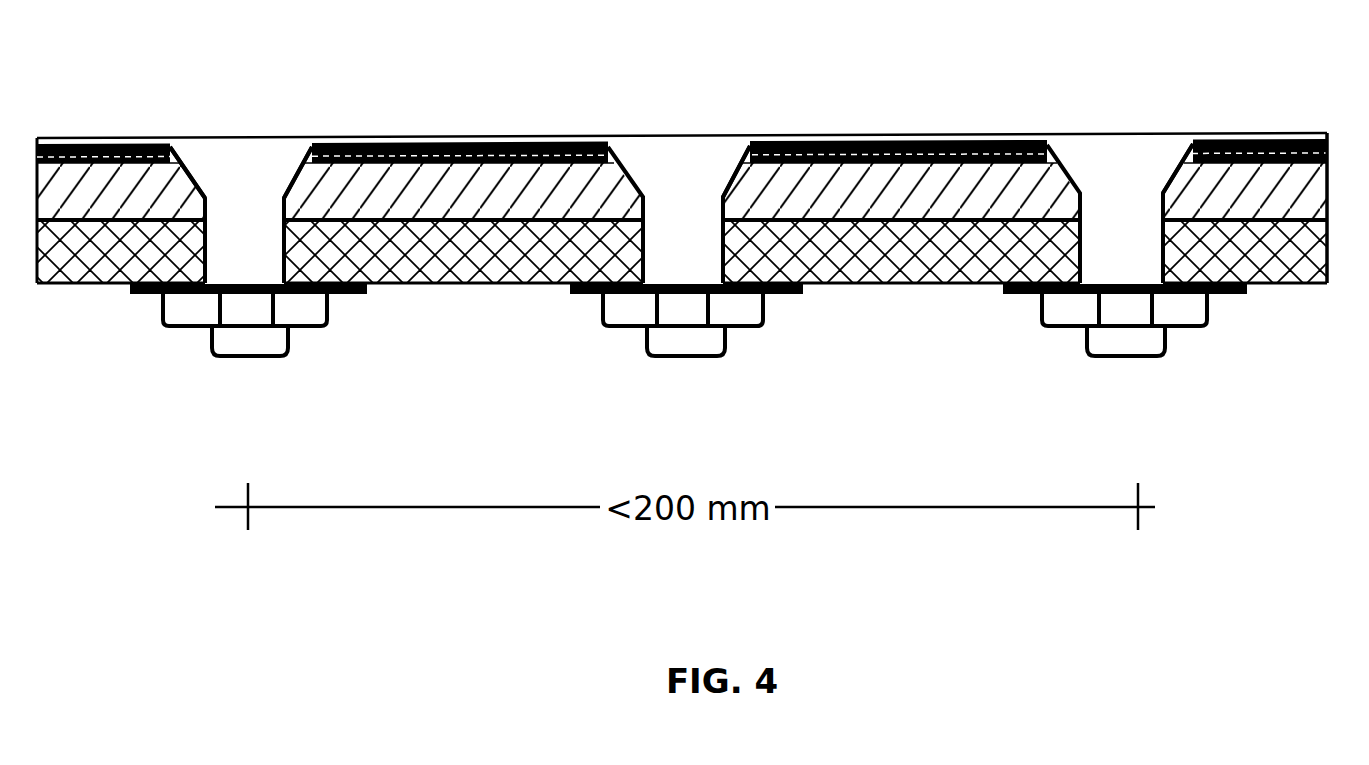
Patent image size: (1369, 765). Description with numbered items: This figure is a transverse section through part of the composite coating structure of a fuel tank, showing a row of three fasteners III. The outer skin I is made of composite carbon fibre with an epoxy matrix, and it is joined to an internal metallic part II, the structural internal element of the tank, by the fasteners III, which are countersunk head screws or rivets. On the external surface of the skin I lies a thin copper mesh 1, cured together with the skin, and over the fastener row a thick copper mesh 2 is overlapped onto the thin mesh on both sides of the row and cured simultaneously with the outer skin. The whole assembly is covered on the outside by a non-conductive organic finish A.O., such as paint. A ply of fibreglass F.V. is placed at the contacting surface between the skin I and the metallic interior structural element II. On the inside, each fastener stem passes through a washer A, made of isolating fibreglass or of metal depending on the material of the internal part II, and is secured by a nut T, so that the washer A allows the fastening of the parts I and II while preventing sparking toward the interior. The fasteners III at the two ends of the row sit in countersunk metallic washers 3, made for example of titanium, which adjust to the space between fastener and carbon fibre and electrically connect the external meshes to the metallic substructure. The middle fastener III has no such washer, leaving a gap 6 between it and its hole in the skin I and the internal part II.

The non-conductive organic finish A.O. is at (78, 138).
The thin copper mesh 1 is at (865, 148).
The thick copper mesh 2 is at (543, 148).
The countersunk metallic washer 3 is at (298, 168).
The gap 6 is at (735, 172).
The skin I is at (905, 205).
The internal metallic part II is at (465, 272).
The fastener III is at (210, 170).
The nut T is at (187, 318).
The washer A is at (358, 295).
The ply of fibreglass F.V. is at (1287, 222).